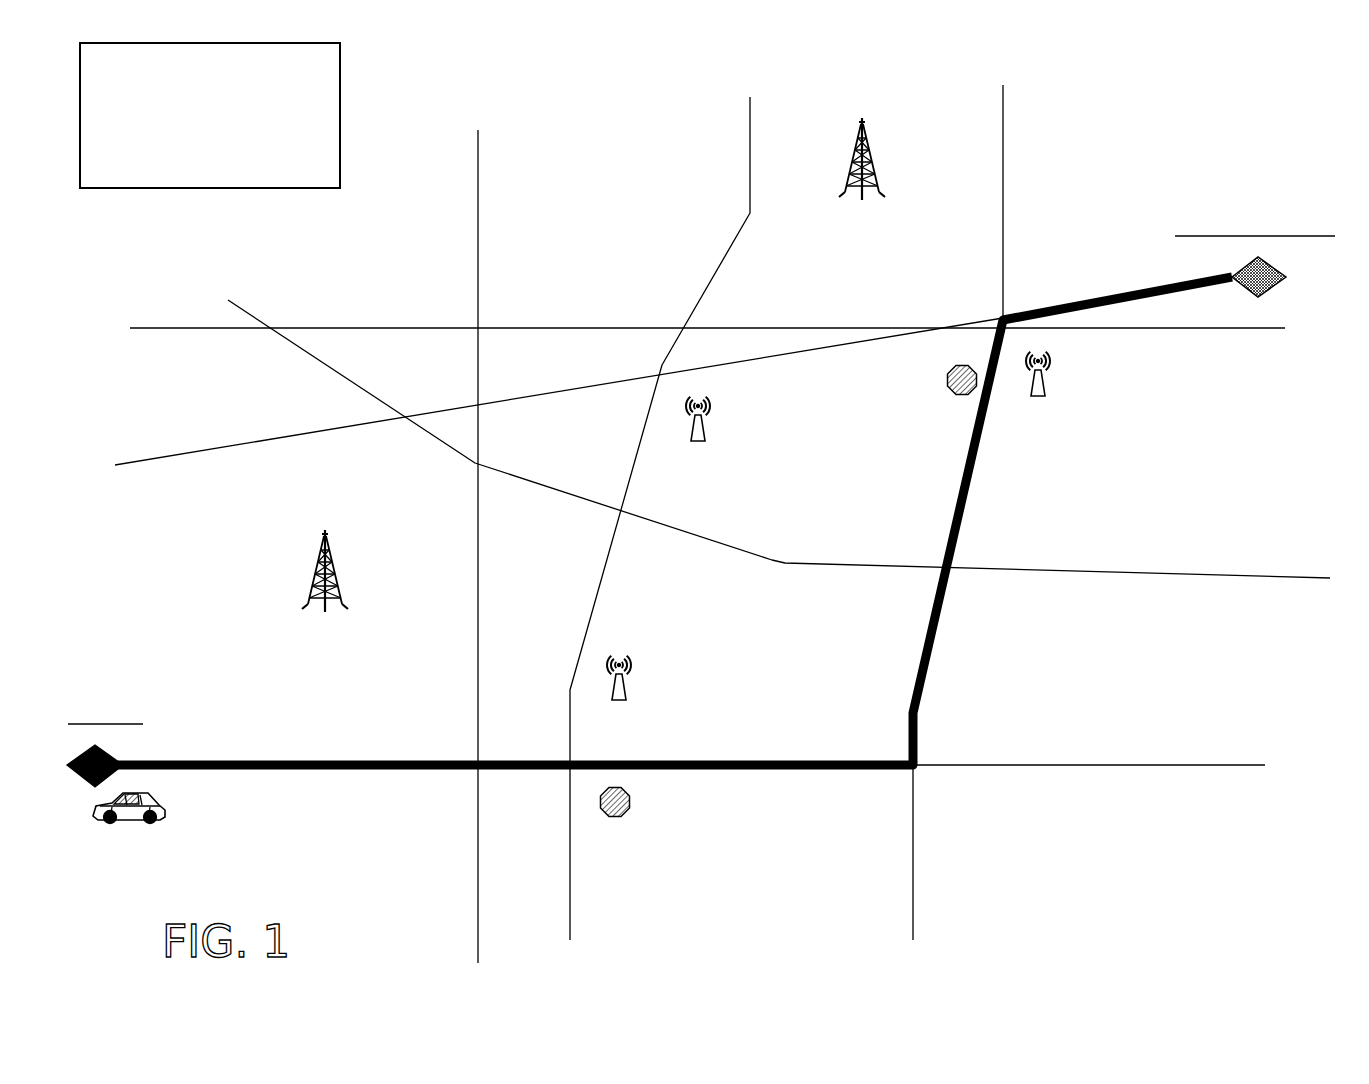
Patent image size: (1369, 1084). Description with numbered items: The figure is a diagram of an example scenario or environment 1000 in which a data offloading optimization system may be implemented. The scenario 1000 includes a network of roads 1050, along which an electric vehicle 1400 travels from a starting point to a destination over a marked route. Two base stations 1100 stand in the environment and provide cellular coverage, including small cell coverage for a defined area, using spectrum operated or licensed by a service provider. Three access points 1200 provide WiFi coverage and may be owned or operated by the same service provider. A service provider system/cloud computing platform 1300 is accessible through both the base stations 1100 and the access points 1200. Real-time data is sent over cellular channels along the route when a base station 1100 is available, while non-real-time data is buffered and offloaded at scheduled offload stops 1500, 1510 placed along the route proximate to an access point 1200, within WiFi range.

The scenario or environment 1000 is at (1203, 167).
The roads 1050 is at (478, 858).
The base stations 1100 is at (596, 387).
The access points 1200 is at (830, 549).
The service provider system/cloud computing platform 1300 is at (240, 232).
The electric vehicle 1400 is at (147, 859).
The offload stop 1500 is at (620, 817).
The offload stop 1510 is at (947, 380).